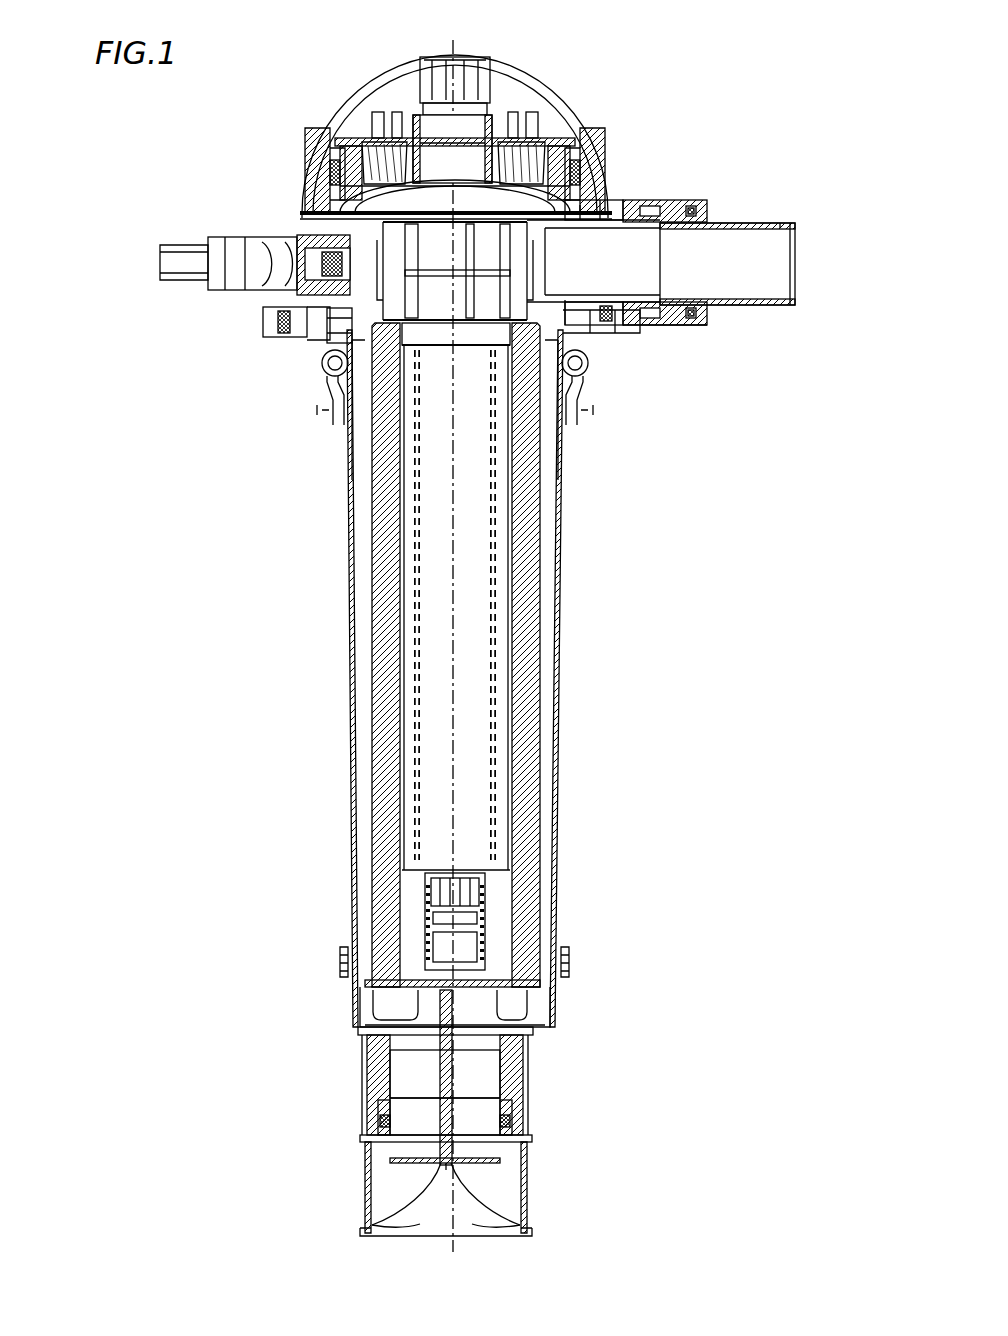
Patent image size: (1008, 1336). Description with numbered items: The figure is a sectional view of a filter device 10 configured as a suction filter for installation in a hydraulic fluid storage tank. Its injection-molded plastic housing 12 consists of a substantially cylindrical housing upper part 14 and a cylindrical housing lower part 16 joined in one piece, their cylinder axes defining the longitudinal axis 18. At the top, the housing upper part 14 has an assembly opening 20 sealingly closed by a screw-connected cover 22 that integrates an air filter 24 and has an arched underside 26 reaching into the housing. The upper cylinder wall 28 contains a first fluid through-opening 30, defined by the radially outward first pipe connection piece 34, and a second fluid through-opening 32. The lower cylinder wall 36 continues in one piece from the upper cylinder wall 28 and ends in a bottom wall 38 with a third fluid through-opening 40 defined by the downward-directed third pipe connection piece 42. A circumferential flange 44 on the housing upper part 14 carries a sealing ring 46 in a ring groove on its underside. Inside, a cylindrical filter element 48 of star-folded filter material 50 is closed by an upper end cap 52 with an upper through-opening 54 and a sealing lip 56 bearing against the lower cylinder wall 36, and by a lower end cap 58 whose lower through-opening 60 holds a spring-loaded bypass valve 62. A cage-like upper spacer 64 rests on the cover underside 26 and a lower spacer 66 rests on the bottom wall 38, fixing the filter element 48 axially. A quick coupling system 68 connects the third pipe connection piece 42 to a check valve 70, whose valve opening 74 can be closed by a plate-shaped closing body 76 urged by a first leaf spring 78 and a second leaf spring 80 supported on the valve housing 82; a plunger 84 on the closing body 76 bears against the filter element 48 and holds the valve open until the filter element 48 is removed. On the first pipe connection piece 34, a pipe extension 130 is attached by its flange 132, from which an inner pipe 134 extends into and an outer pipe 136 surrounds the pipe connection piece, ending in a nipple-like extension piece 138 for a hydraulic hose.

The filter device 10 is at (604, 88).
The housing 12 is at (345, 440).
The housing upper part 14 is at (301, 190).
The housing lower part 16 is at (347, 698).
The longitudinal axis 18 is at (441, 48).
The assembly opening 20 is at (583, 152).
The cover 22 is at (522, 88).
The air filter 24 is at (372, 162).
The arched underside 26 is at (331, 221).
The upper cylinder wall 28 is at (608, 202).
The first fluid through-opening 30 is at (631, 320).
The second fluid through-opening 32 is at (300, 294).
The first pipe connection piece 34 is at (604, 328).
The lower cylinder wall 36 is at (350, 802).
The bottom wall 38 is at (376, 1024).
The third fluid through-opening 40 is at (380, 1080).
The third pipe connection piece 42 is at (372, 1046).
The circumferential flange 44 is at (268, 322).
The sealing ring 46 is at (325, 350).
The filter element 48 is at (374, 612).
The filter material 50 is at (385, 572).
The upper end cap 52 is at (565, 325).
The upper through-opening 54 is at (493, 318).
The sealing lip 56 is at (560, 370).
The lower end cap 58 is at (486, 994).
The lower through-opening 60 is at (483, 1024).
The bypass valve 62 is at (494, 950).
The upper spacer 64 is at (322, 190).
The lower spacer 66 is at (395, 994).
The quick coupling system 68 is at (665, 192).
The check valve 70 is at (366, 1184).
The valve opening 74 is at (490, 1132).
The closing body 76 is at (488, 1166).
The first leaf spring 78 is at (418, 1222).
The second leaf spring 80 is at (480, 1222).
The valve housing 82 is at (520, 1112).
The plunger 84 is at (456, 1064).
The pipe extension 130 is at (740, 324).
The flange 132 is at (722, 224).
The inner pipe 134 is at (662, 229).
The outer pipe 136 is at (700, 210).
The extension piece 138 is at (795, 236).